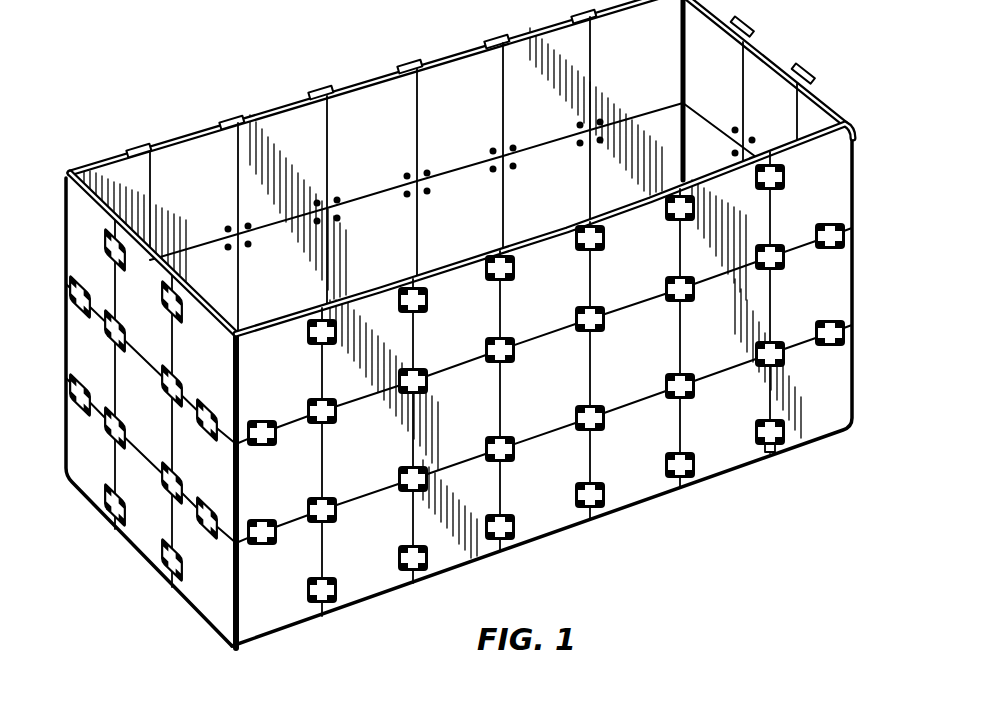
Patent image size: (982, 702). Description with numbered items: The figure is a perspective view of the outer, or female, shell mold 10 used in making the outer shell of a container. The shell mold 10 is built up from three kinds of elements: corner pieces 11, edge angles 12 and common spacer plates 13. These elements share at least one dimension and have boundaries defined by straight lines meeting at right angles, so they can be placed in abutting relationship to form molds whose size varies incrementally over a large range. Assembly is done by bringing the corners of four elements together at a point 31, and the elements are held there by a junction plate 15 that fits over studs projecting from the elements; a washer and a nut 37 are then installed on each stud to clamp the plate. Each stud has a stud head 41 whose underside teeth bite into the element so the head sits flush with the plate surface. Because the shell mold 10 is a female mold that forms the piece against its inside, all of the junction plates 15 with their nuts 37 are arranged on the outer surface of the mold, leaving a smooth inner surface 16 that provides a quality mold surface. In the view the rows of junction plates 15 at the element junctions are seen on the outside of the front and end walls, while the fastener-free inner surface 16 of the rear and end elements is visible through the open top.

The shell mold 10 is at (160, 108).
The corner pieces 11 is at (263, 618).
The edge angles 12 is at (825, 293).
The spacer plates 13 is at (642, 369).
The junction plate 15 is at (670, 466).
The inner surface 16 is at (283, 148).
The point 31 is at (407, 178).
The nut 37 is at (773, 450).
The stud head 41 is at (583, 127).